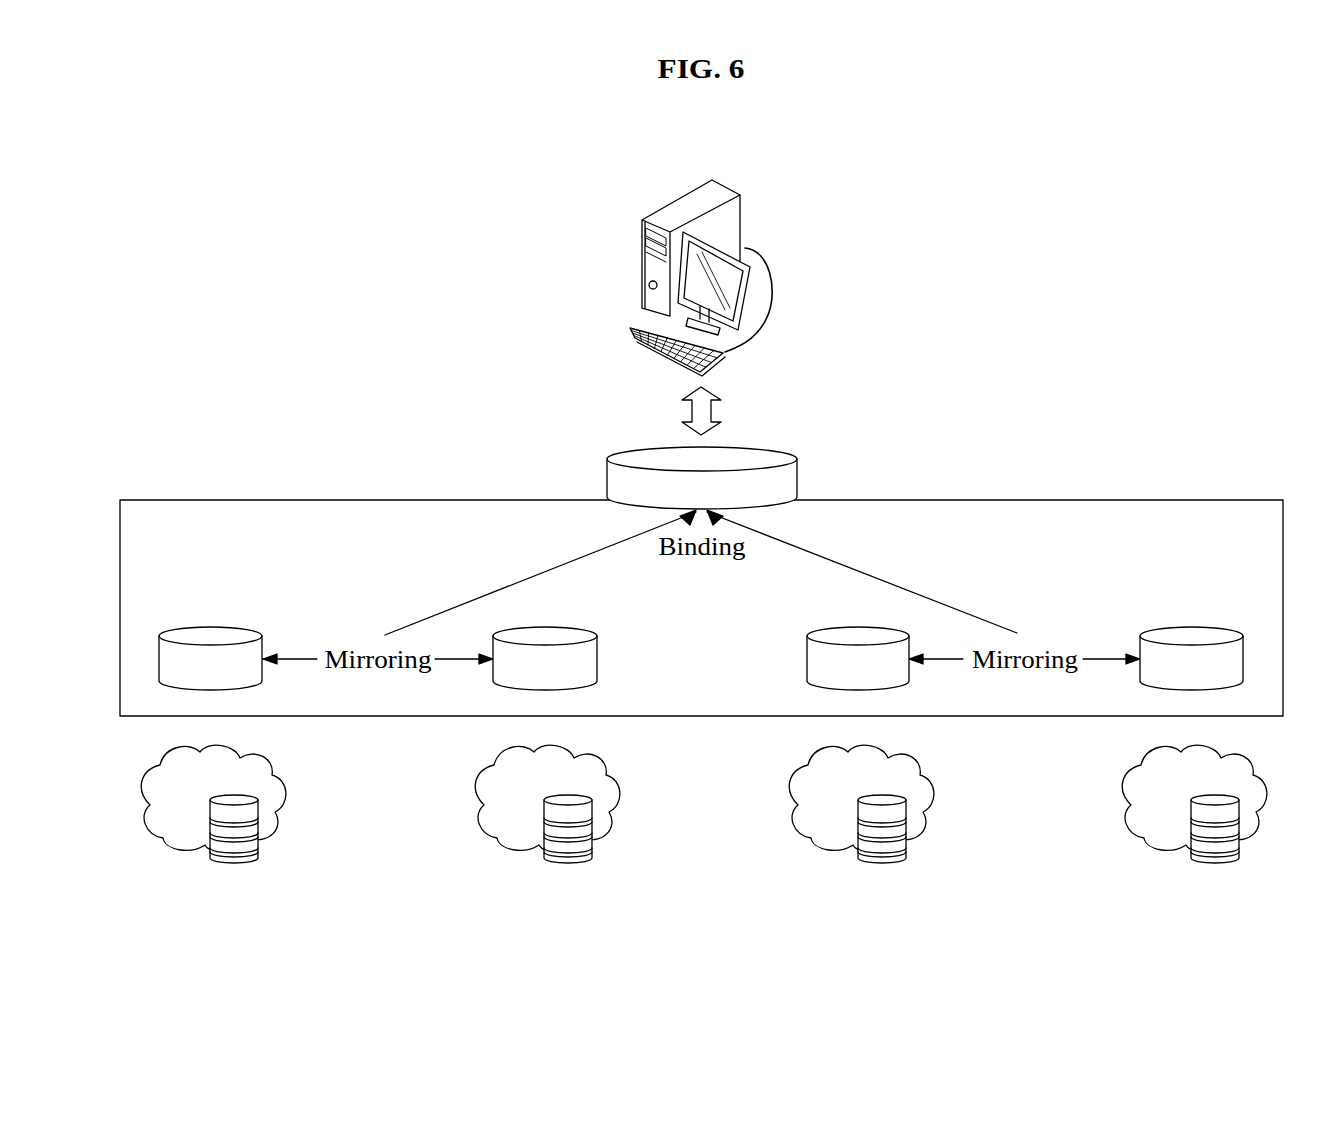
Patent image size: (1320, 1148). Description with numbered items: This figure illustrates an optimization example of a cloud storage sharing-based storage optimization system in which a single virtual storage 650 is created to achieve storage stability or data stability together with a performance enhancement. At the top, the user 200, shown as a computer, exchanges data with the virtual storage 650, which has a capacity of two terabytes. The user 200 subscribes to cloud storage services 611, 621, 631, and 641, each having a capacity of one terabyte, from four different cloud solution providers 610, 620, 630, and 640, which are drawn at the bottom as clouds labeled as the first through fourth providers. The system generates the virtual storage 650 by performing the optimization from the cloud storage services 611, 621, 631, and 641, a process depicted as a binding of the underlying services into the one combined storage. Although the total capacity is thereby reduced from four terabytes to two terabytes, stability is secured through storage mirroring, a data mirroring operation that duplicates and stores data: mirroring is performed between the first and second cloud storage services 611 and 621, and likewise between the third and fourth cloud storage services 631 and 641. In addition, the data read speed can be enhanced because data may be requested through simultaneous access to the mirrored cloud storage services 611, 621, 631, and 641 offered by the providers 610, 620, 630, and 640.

The user 200 is at (727, 183).
The virtual storage 650 is at (758, 447).
The cloud storage service 611 is at (210, 627).
The cloud storage service 621 is at (545, 627).
The cloud storage service 631 is at (857, 627).
The cloud storage service 641 is at (1191, 627).
The cloud solution provider 610 is at (218, 905).
The cloud solution provider 620 is at (552, 905).
The cloud solution provider 630 is at (866, 905).
The cloud solution provider 640 is at (1199, 905).